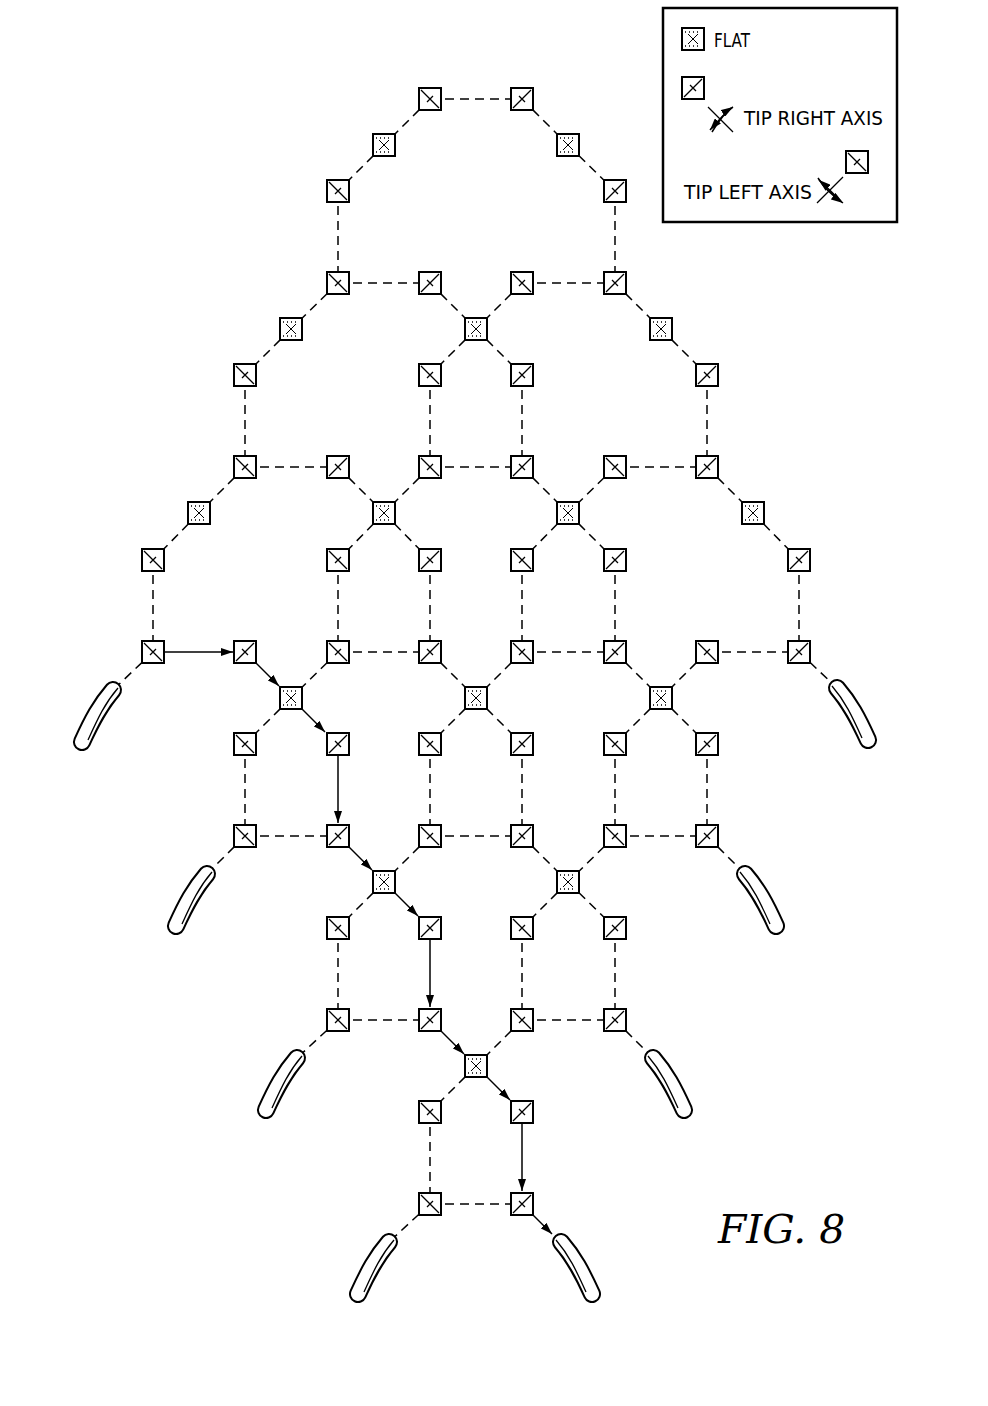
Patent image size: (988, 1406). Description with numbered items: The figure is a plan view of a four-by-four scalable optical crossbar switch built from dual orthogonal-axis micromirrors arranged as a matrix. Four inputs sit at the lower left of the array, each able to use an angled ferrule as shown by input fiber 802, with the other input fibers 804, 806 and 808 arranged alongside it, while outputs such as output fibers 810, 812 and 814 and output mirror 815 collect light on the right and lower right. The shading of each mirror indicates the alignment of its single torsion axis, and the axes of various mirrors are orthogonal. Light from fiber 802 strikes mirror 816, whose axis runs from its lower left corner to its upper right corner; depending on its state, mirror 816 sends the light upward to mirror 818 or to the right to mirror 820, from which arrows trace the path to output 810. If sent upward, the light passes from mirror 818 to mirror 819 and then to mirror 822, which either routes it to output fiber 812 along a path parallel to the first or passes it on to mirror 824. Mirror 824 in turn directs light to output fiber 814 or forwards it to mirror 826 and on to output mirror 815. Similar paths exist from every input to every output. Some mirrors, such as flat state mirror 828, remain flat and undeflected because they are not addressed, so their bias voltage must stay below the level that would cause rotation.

The input fiber 802 is at (105, 728).
The input fiber 804 is at (182, 898).
The input fiber 806 is at (274, 1082).
The input fiber 808 is at (366, 1266).
The output fiber 810 is at (584, 1266).
The output fiber 812 is at (678, 1082).
The output fiber 814 is at (770, 898).
The output mirror 815 is at (846, 724).
The mirror 816 is at (142, 648).
The mirror 818 is at (143, 556).
The mirror 819 is at (189, 512).
The mirror 820 is at (246, 641).
The mirror 822 is at (236, 463).
The mirror 824 is at (327, 281).
The mirror 826 is at (431, 87).
The flat state mirror 828 is at (281, 697).